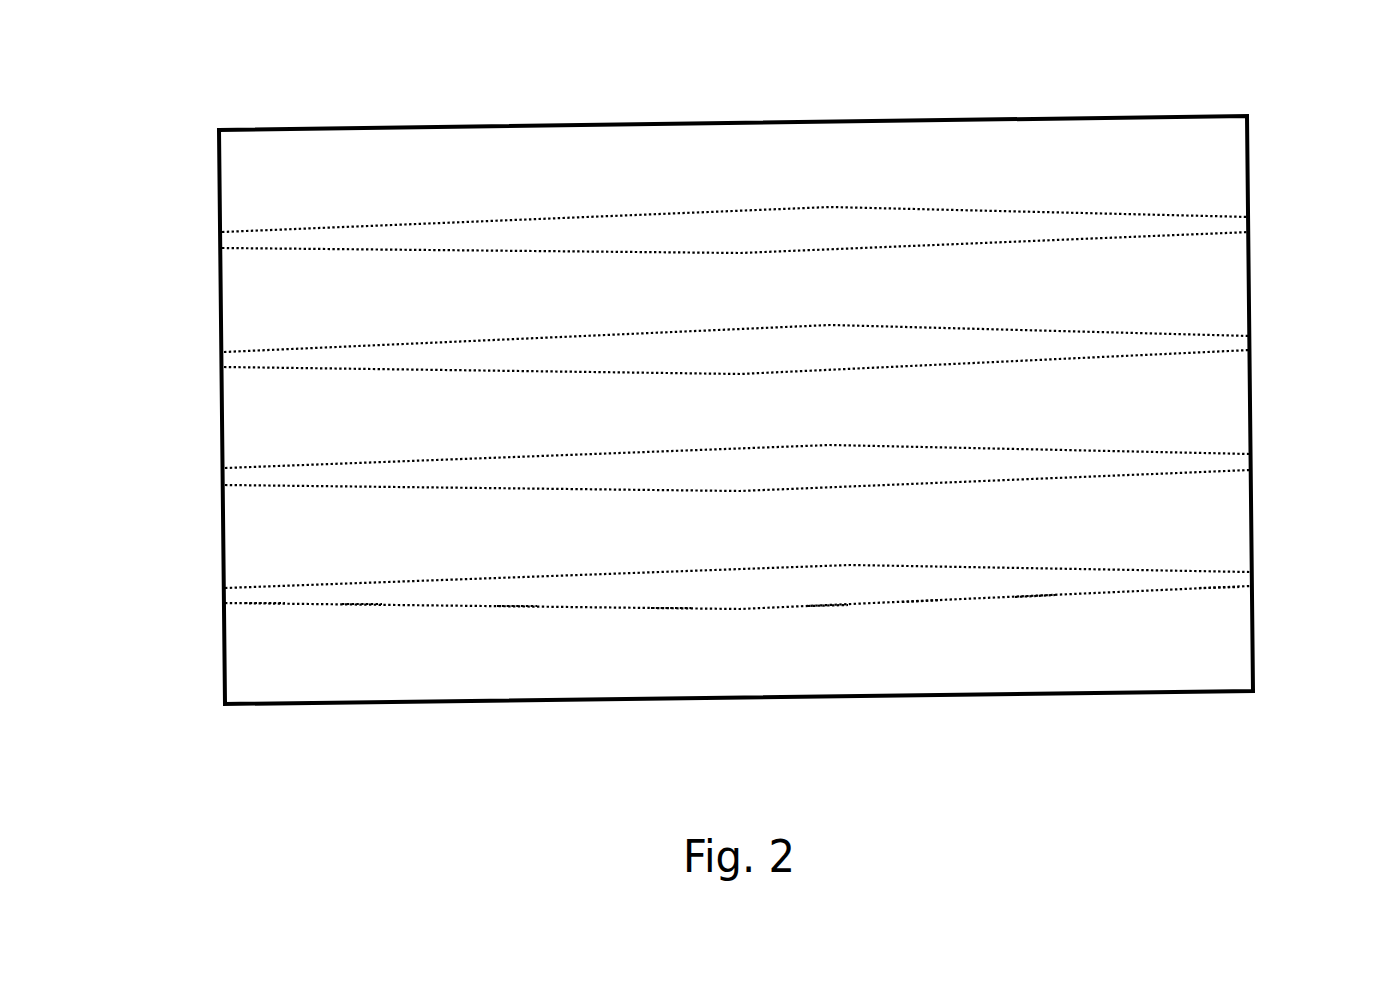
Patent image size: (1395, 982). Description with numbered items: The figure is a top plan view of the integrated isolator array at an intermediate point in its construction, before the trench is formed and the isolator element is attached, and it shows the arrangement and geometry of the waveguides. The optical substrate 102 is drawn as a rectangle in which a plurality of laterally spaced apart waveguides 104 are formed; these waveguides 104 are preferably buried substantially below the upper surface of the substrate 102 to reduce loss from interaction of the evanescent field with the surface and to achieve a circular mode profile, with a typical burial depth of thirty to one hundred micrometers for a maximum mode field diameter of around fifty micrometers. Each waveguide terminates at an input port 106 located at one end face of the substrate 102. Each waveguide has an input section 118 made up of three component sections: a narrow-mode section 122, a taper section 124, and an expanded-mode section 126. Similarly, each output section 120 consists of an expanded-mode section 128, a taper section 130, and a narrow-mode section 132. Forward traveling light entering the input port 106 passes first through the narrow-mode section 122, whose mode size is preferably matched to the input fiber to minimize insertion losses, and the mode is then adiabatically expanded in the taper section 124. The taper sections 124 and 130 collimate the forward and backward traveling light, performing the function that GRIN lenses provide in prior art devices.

The optical substrate 102 is at (413, 157).
The waveguides 104 is at (160, 232).
The input port 106 is at (220, 598).
The waveguide input section 118 is at (362, 597).
The output section 120 is at (922, 584).
The narrow-mode section 122 is at (263, 597).
The taper section 124 is at (517, 593).
The expanded-mode section 126 is at (671, 592).
The expanded-mode section 128 is at (828, 586).
The taper section 130 is at (1035, 578).
The narrow-mode section 132 is at (1219, 578).